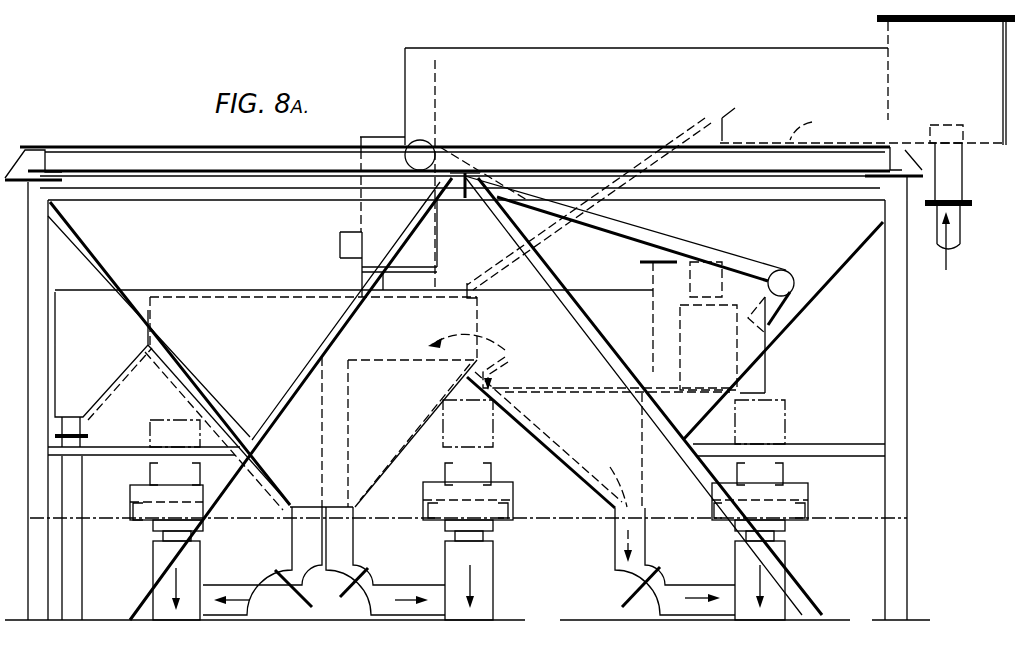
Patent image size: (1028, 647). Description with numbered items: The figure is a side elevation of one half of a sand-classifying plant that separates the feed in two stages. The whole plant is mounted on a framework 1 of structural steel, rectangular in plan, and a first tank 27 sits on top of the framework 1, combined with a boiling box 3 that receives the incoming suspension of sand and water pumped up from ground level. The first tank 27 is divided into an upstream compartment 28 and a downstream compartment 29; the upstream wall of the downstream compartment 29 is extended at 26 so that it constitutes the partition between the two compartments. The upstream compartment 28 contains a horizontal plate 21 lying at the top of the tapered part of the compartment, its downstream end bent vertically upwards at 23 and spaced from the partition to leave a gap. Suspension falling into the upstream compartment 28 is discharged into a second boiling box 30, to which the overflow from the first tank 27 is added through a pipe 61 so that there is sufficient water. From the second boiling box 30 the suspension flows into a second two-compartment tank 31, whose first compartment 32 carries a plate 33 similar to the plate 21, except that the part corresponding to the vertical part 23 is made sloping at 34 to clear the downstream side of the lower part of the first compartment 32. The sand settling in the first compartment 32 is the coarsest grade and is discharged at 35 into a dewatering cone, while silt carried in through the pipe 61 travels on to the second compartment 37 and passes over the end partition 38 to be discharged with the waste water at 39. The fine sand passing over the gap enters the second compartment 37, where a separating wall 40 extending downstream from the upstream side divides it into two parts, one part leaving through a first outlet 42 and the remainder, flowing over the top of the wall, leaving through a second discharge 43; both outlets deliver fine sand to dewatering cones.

The framework 1 is at (292, 401).
The boiling box 3 is at (952, 82).
The horizontal plate 21 is at (815, 120).
The vertical part 23 is at (727, 127).
The extended upstream wall 26 is at (700, 117).
The first tank 27 is at (672, 53).
The upstream compartment 28 is at (725, 226).
The downstream compartment 29 is at (475, 262).
The second boiling box 30 is at (716, 353).
The second two-compartment tank 31 is at (248, 291).
The first compartment 32 is at (602, 442).
The plate 33 is at (540, 390).
The sloping part 34 is at (506, 370).
The discharge 35 is at (747, 587).
The second compartment 37 is at (277, 332).
The end partition 38 is at (152, 315).
The waste water discharge 39 is at (72, 482).
The separating wall 40 is at (377, 373).
The first outlet 42 is at (345, 566).
The second discharge 43 is at (310, 556).
The pipe 61 is at (622, 238).